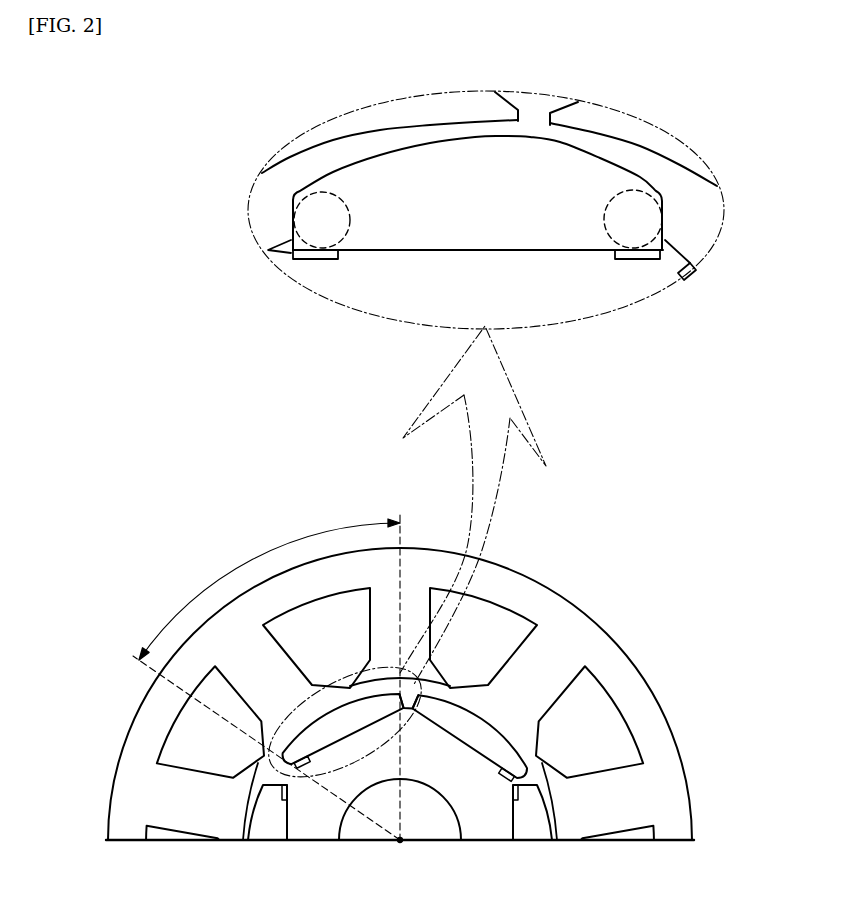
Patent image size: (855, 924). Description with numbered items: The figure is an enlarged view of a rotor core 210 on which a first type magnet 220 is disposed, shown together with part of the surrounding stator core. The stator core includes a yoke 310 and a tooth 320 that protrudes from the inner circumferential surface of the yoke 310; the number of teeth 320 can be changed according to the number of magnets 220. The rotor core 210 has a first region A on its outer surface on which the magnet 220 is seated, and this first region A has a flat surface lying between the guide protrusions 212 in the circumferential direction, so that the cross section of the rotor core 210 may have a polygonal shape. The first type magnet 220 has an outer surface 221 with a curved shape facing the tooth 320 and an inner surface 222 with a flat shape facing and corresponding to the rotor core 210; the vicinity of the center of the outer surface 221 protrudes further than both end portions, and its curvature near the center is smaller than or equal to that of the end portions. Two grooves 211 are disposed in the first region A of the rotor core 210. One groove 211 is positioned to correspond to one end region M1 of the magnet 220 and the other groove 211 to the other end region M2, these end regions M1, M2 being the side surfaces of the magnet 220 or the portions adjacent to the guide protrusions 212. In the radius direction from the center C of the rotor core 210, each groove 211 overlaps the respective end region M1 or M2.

The yoke 310 is at (646, 725).
The tooth 320 is at (414, 110).
The first type magnet 220 is at (485, 152).
The outer surface 221 is at (537, 141).
The inner surface 222 is at (570, 252).
The rotor core 210 is at (384, 281).
The groove 211 is at (318, 260).
The guide protrusion 212 is at (268, 244).
The one end region M1 is at (293, 218).
The other end region M2 is at (663, 213).
The first region A is at (247, 564).
The center C is at (400, 865).